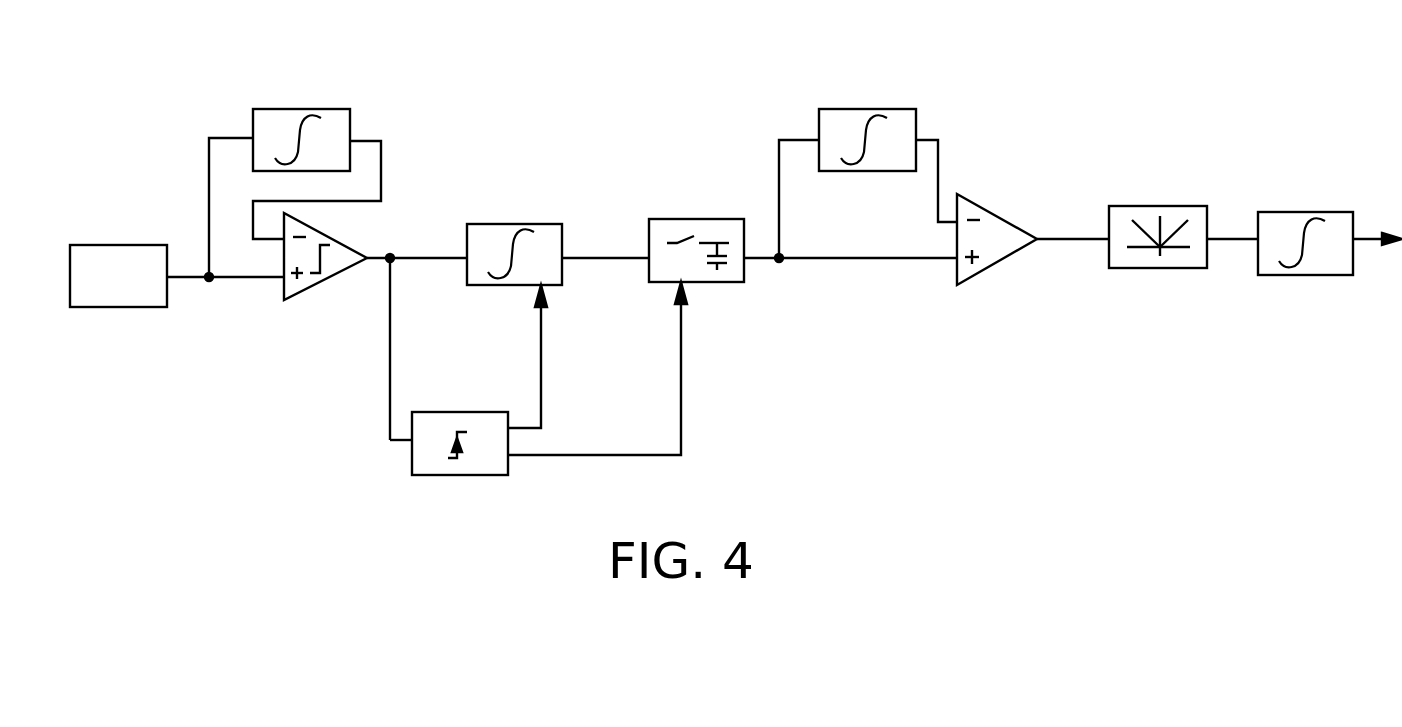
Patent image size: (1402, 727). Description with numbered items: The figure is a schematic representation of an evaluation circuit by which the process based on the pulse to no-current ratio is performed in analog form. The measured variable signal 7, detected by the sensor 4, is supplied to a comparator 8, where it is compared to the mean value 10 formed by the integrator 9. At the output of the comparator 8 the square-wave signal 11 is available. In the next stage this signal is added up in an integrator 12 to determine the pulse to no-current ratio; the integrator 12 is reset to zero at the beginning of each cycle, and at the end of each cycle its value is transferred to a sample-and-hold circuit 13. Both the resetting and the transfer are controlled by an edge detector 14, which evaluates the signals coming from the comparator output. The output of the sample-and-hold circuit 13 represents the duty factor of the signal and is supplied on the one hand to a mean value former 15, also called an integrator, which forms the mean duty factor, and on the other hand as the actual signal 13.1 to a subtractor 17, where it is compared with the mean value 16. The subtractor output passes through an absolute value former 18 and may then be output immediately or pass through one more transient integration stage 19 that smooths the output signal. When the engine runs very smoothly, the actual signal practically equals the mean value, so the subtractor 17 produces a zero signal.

The sensor 4 is at (112, 264).
The measured variable signal 7 is at (188, 279).
The comparator 8 is at (300, 288).
The integrator 9 is at (333, 114).
The mean value 10 is at (385, 156).
The square-wave signal 11 is at (380, 254).
The integrator 12 is at (500, 232).
The sample-and-hold circuit 13 is at (665, 228).
The actual signal 13.1 is at (892, 260).
The edge detector 14 is at (480, 459).
The mean value former 15 is at (848, 108).
The mean value 16 is at (938, 166).
The subtractor 17 is at (990, 252).
The absolute value former 18 is at (1122, 214).
The transient integration stage 19 is at (1280, 222).